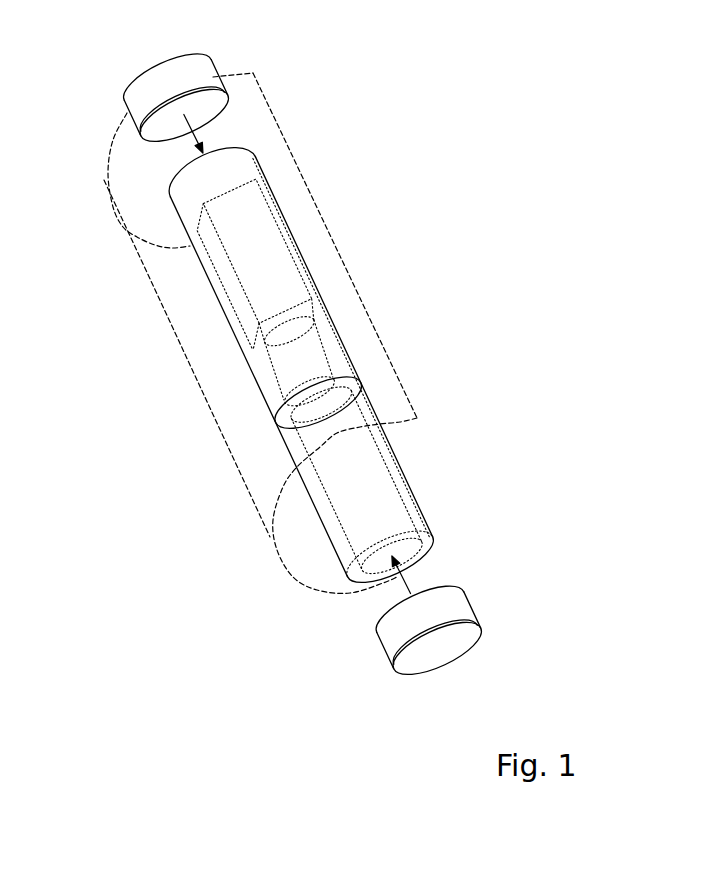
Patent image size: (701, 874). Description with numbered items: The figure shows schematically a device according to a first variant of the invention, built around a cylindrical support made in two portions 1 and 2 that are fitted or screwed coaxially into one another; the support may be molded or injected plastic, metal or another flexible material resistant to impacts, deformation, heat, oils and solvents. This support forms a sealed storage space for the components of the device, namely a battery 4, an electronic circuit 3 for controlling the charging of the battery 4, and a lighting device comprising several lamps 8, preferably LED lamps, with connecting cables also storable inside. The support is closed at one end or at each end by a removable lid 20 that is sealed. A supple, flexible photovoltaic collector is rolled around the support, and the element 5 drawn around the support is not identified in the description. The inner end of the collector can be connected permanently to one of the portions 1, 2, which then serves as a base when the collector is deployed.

The first portion of the support 1 is at (173, 207).
The second portion of the support 2 is at (425, 518).
The electronic circuit 3 is at (330, 352).
The battery 4 is at (282, 248).
The sheath 5 is at (187, 363).
The lamps 8 is at (378, 470).
The removable lid 20 is at (102, 40).